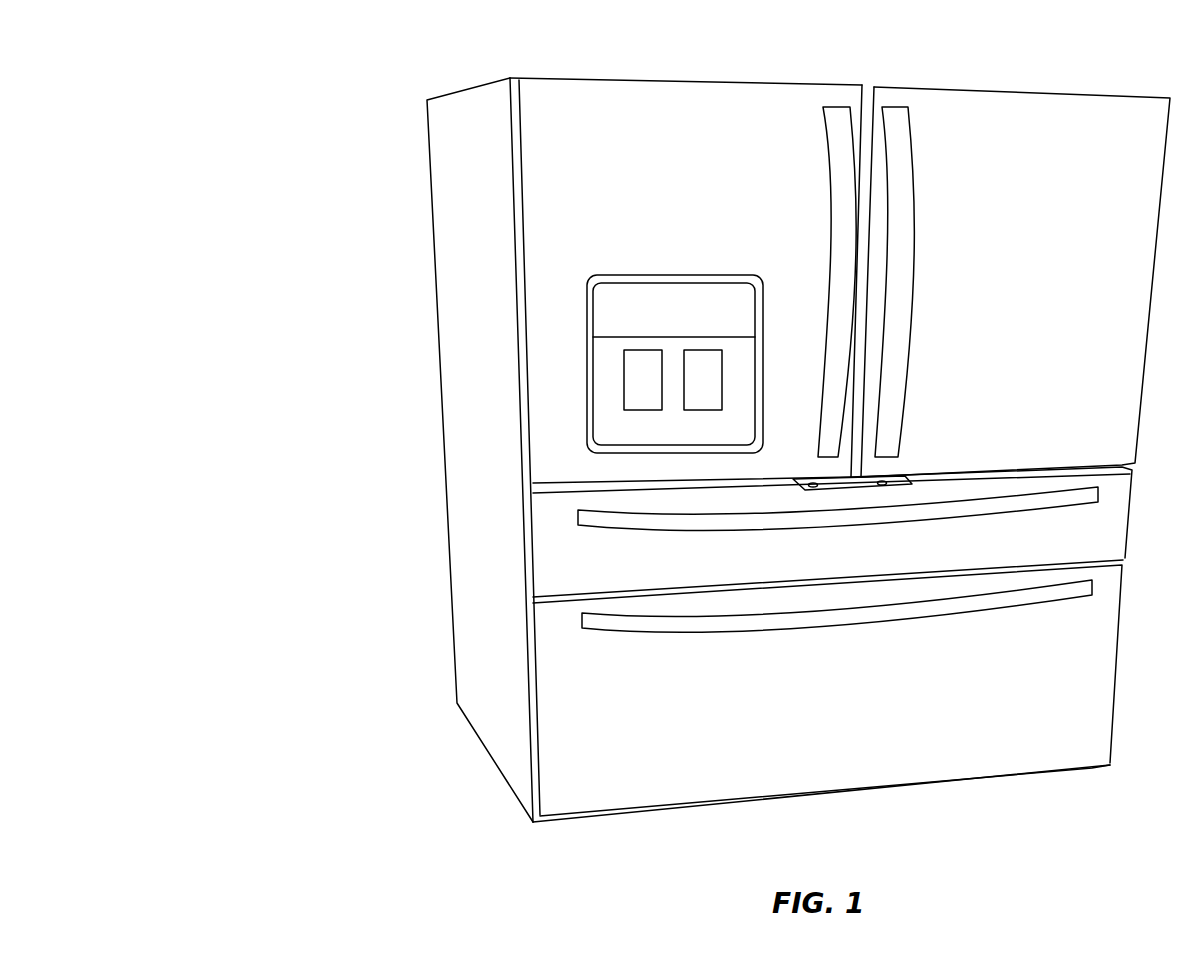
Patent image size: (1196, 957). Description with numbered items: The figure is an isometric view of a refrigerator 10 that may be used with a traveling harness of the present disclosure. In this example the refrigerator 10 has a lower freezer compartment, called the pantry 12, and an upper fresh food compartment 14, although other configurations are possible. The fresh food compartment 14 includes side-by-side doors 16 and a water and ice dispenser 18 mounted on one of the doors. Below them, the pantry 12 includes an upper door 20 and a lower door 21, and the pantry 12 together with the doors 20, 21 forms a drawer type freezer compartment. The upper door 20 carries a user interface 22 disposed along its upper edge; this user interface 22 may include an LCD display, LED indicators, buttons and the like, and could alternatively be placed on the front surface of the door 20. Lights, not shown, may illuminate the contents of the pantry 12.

The refrigerator 10 is at (387, 62).
The pantry 12 is at (494, 597).
The fresh food compartment 14 is at (488, 252).
The side-by-side doors 16 is at (687, 181).
The water and ice dispenser 18 is at (680, 273).
The upper door 20 is at (845, 567).
The lower door 21 is at (847, 702).
The user interface 22 is at (830, 480).